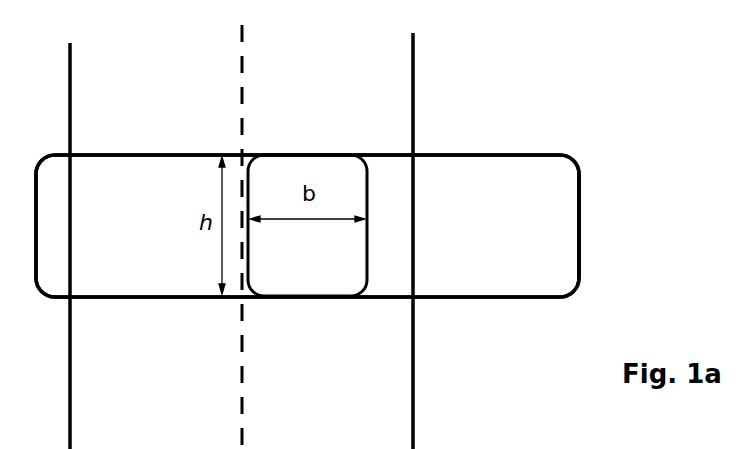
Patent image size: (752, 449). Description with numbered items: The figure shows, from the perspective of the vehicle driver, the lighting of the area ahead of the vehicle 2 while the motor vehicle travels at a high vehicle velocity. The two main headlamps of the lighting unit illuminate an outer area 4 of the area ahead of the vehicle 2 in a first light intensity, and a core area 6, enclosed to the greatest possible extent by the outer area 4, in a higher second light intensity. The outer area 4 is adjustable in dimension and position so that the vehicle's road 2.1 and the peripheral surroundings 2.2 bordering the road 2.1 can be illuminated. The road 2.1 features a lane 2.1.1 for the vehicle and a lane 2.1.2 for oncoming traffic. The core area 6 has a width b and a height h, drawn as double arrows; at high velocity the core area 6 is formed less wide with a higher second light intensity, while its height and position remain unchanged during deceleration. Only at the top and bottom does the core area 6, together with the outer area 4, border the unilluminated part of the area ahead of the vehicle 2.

The area ahead of the vehicle 2 is at (603, 50).
The road 2.1 is at (413, 131).
The peripheral surroundings 2.2 is at (582, 152).
The outer area 4 is at (553, 197).
The core area 6 is at (353, 269).
The lane for the vehicle 2.1.1 is at (386, 346).
The lane for oncoming traffic 2.1.2 is at (208, 318).